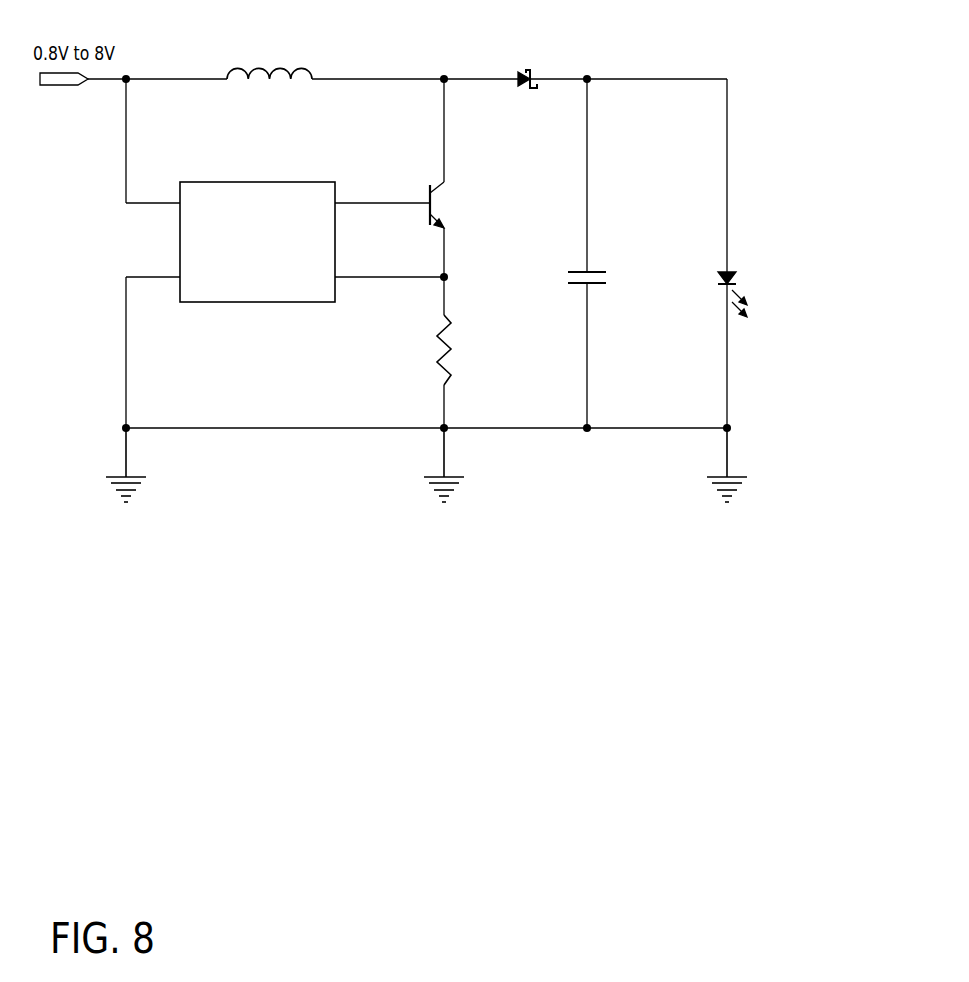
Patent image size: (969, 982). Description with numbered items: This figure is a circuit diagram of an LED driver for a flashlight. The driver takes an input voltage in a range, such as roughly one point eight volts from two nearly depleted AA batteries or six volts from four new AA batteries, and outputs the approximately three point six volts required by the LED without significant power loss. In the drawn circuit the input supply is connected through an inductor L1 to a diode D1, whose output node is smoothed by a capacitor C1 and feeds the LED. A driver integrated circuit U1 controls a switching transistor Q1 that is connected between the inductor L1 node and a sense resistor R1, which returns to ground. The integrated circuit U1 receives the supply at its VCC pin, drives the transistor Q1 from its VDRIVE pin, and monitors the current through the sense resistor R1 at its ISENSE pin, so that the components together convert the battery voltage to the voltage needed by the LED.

The inductor 100uH L1 is at (269, 47).
The Schottky diode ZHCS1000/SOT D1 is at (519, 51).
The LED driver IC ZXSC300 U1 is at (302, 226).
The NPN transistor FMMT617 Q1 is at (482, 178).
The sense resistor 0.1 Ohm R1 is at (481, 352).
The capacitor 2.2uF 16V C1 is at (613, 280).
The element LED is at (805, 292).